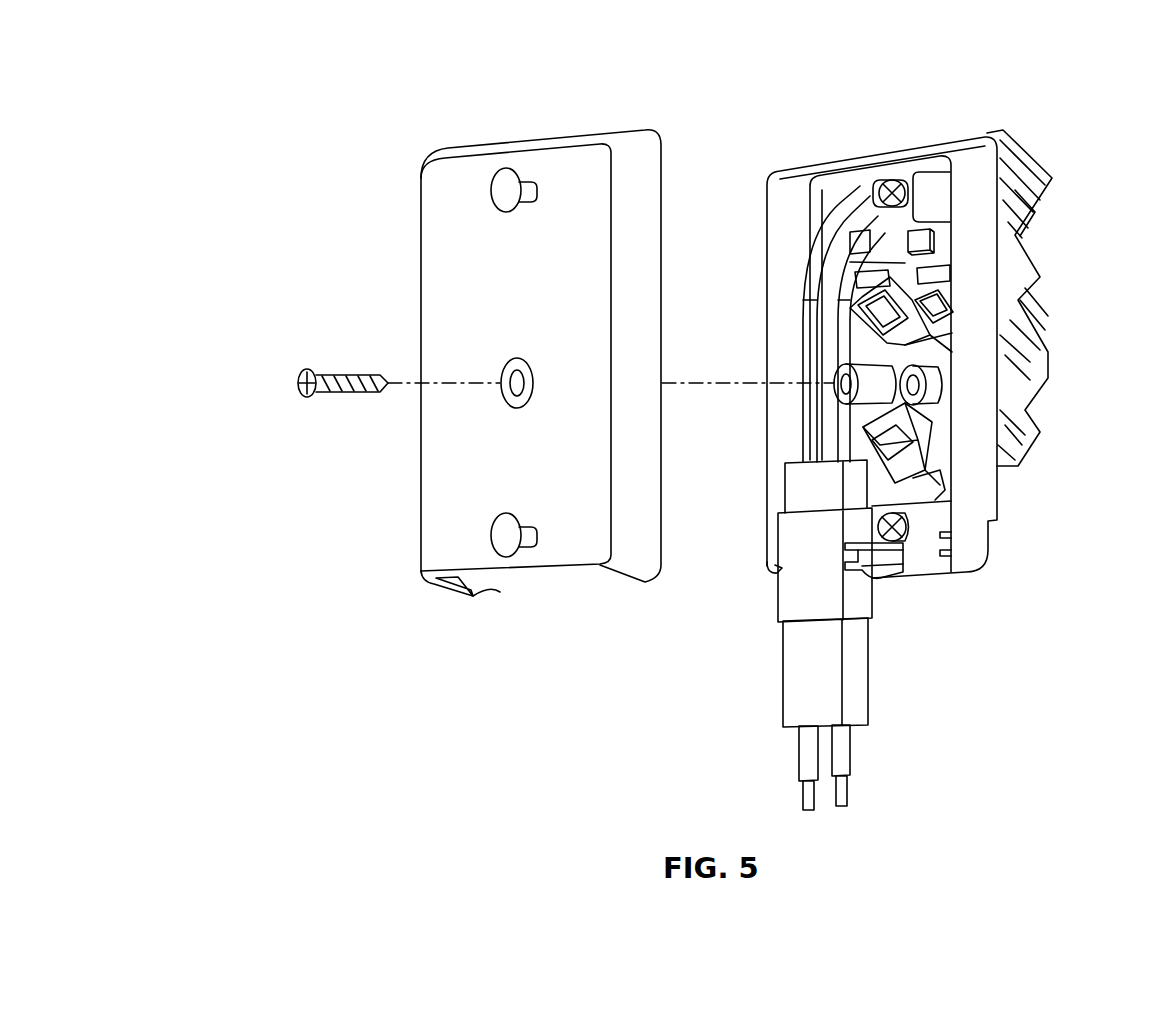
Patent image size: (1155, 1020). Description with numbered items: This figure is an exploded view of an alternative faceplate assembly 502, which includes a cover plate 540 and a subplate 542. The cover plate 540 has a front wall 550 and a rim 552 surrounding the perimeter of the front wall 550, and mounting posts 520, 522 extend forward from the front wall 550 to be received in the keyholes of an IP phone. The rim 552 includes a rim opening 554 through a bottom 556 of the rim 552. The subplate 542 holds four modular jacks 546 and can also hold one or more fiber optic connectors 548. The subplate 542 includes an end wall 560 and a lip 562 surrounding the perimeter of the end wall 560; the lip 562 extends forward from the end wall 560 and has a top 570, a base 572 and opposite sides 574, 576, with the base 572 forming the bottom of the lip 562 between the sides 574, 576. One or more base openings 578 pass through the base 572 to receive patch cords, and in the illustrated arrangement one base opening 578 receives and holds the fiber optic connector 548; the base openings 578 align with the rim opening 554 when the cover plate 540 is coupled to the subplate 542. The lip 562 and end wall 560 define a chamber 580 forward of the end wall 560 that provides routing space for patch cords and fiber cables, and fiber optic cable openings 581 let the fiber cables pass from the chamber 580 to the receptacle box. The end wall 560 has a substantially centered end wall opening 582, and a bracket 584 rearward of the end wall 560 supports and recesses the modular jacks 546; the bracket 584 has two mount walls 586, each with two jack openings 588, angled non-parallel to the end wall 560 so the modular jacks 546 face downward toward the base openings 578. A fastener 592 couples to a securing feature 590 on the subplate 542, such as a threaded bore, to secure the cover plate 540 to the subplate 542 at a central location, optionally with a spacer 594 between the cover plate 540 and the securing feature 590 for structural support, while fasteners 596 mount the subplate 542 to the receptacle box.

The faceplate assembly 502 is at (362, 117).
The mounting post 520 is at (490, 202).
The mounting post 522 is at (490, 540).
The cover plate 540 is at (438, 268).
The subplate 542 is at (971, 218).
The modular jack 546 is at (1038, 184).
The fiber optic connector 548 is at (800, 612).
The front wall 550 is at (453, 460).
The rim 552 is at (478, 580).
The rim opening 554 is at (543, 590).
The bottom 556 is at (452, 597).
The end wall 560 is at (887, 226).
The lip 562 is at (957, 150).
The top 570 is at (835, 150).
The base 572 is at (948, 556).
The side 574 is at (975, 497).
The side 576 is at (773, 573).
The base opening 578 is at (912, 557).
The chamber 580 is at (899, 172).
The fiber optic cable opening 581 is at (824, 197).
The end wall opening 582 is at (897, 300).
The bracket 584 is at (873, 370).
The mount wall 586 is at (905, 265).
The jack opening 588 is at (932, 406).
The securing feature 590 is at (926, 357).
The fastener 592 is at (340, 365).
The spacer 594 is at (855, 366).
The fastener 596 is at (892, 179).